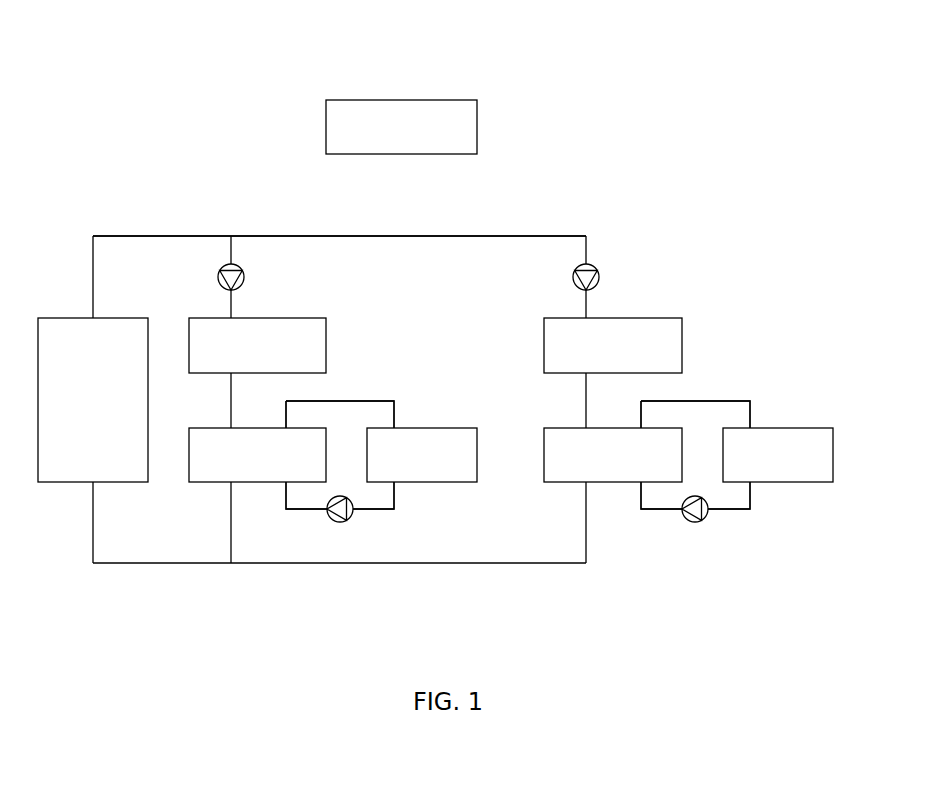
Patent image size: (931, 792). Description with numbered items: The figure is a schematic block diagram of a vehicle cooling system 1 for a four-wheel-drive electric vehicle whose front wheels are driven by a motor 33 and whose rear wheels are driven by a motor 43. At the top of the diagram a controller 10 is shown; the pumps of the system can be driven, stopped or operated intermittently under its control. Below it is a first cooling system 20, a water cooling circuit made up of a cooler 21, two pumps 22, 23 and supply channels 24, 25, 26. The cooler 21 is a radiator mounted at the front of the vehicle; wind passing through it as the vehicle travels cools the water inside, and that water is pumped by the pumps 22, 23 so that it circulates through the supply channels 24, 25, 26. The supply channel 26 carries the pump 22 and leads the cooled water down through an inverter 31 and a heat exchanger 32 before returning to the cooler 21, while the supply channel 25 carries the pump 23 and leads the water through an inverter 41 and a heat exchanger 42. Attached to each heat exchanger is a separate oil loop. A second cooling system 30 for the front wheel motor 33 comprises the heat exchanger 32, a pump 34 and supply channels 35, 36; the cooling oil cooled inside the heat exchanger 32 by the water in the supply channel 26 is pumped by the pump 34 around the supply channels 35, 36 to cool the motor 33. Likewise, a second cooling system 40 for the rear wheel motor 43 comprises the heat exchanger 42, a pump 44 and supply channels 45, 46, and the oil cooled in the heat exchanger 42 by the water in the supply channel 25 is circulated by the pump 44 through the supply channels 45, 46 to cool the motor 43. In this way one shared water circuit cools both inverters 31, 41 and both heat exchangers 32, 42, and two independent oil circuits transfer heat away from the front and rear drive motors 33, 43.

The vehicle cooling system 1 is at (544, 78).
The controller 10 is at (421, 100).
The first cooling system 20 is at (111, 218).
The cooler 21 is at (121, 318).
The pump 22 is at (218, 277).
The pump 23 is at (573, 278).
The supply channel 24 is at (179, 236).
The supply channel 25 is at (458, 236).
The supply channel 26 is at (231, 530).
The second cooling system 30 is at (409, 385).
The inverter 31 is at (286, 318).
The heat exchanger 32 is at (259, 428).
The motor 33 is at (449, 428).
The pump 34 is at (341, 496).
The supply channel 35 is at (349, 401).
The supply channel 36 is at (394, 505).
The second cooling system 40 is at (761, 386).
The inverter 41 is at (641, 318).
The heat exchanger 42 is at (614, 428).
The motor 43 is at (806, 428).
The pump 44 is at (700, 496).
The supply channel 45 is at (705, 401).
The supply channel 46 is at (750, 496).